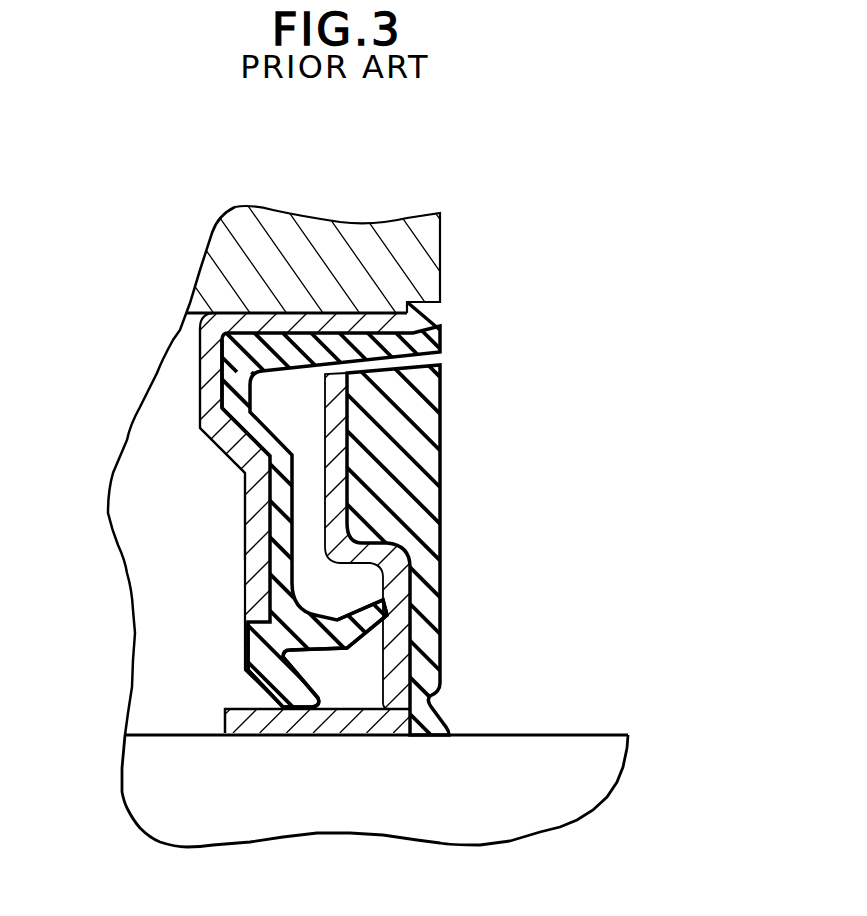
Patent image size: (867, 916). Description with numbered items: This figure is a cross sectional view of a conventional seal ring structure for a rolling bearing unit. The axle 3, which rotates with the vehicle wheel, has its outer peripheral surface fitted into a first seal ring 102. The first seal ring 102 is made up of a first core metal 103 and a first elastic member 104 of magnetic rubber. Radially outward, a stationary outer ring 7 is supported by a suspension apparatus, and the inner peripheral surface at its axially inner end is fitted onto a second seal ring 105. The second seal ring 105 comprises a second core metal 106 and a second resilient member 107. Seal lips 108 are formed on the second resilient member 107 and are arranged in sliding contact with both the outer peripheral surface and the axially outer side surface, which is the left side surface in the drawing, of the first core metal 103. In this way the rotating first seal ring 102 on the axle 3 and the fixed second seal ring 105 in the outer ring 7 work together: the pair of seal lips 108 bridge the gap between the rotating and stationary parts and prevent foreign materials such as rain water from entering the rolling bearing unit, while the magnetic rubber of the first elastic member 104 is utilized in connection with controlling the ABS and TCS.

The axle 3 is at (512, 760).
The stationary outer ring 7 is at (365, 237).
The first seal ring 102 is at (425, 478).
The first core metal 103 is at (395, 665).
The first elastic member 104 is at (418, 385).
The second seal ring 105 is at (217, 393).
The second core metal 106 is at (238, 463).
The second resilient member 107 is at (243, 325).
The seal lips 108 is at (373, 613).